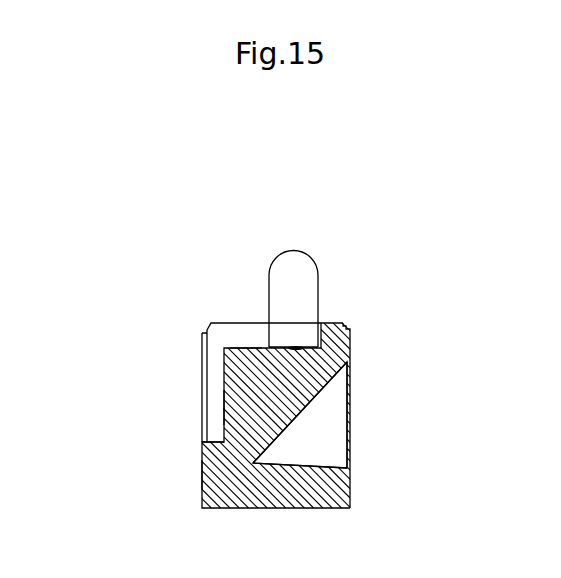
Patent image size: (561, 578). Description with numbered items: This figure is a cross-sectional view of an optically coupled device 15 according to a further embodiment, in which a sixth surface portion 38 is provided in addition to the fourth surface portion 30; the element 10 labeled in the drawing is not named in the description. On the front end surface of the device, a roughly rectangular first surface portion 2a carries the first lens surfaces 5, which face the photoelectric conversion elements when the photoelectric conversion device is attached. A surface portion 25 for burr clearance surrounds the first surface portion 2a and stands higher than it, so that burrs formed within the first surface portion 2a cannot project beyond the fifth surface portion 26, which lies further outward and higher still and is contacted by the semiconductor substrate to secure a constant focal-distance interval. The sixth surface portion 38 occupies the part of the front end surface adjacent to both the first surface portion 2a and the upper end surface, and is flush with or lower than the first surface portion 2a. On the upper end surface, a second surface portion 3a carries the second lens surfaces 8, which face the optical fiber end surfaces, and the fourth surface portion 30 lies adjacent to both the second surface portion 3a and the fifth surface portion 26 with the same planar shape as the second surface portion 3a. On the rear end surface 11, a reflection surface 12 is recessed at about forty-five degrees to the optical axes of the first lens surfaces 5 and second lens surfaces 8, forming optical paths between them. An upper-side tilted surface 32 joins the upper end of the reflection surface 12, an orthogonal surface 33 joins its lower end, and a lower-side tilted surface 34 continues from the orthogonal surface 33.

The optically coupled device 15 is at (118, 195).
The contact pin 10 is at (278, 252).
The fourth surface portion 30 is at (245, 347).
The second lens surfaces 8 is at (291, 347).
The second surface portion 3a is at (305, 347).
The rear end surface 11 is at (350, 338).
The sixth surface portion 38 is at (206, 367).
The first surface portion 2a is at (223, 400).
The first lens surfaces 5 is at (223, 415).
The surface portion for burr clearance 25 is at (207, 443).
The fifth surface portion 26 is at (203, 473).
The upper-side tilted surface 32 is at (349, 365).
The reflection surface 12 is at (308, 403).
The orthogonal surface 33 is at (255, 462).
The lower-side tilted surface 34 is at (308, 466).